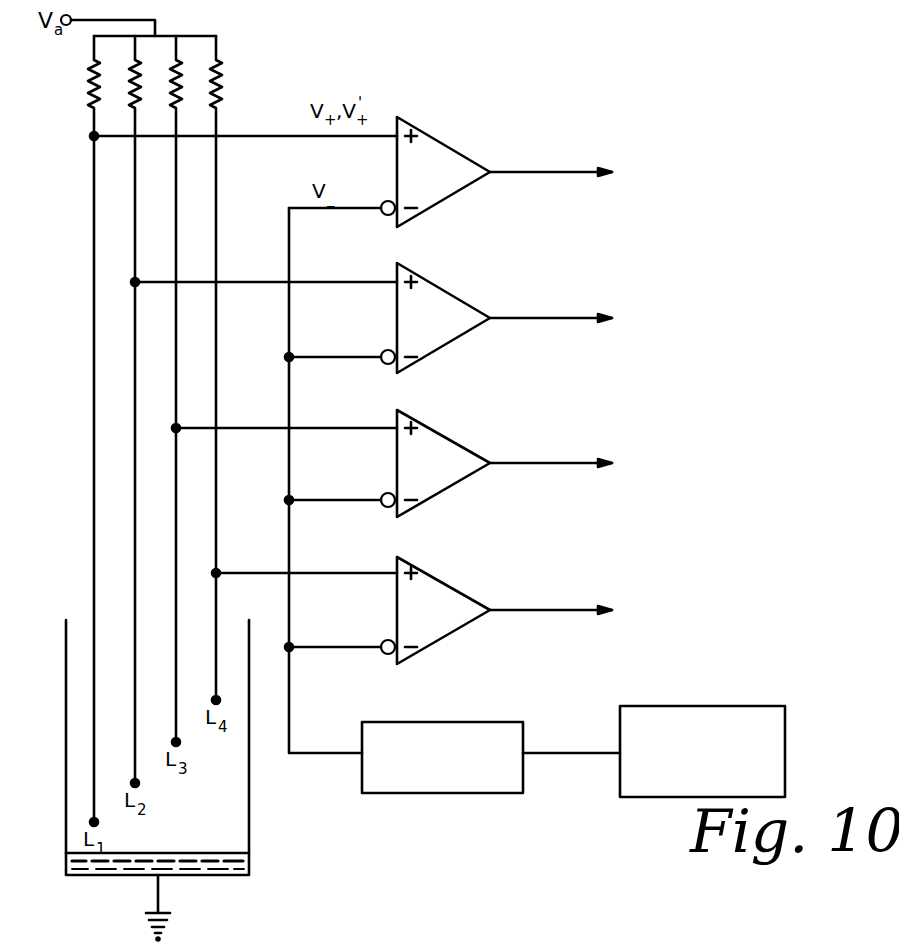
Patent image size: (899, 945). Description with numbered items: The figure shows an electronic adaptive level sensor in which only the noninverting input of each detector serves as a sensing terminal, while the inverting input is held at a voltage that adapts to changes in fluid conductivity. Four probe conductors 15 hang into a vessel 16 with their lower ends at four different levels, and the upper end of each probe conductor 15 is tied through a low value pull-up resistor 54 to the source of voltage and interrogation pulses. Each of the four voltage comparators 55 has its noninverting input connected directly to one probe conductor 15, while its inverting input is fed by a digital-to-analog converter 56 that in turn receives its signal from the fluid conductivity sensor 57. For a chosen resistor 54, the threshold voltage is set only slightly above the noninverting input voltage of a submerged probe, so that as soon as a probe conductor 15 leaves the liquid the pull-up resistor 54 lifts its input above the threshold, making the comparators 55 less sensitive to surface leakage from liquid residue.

The probe conductor 15 is at (94, 575).
The fluid vessel 16 is at (249, 811).
The resistor 54 is at (217, 86).
The voltage comparator 55 is at (443, 145).
The digital-to-analog converter 56 is at (490, 722).
The fluid conductivity sensor 57 is at (742, 706).